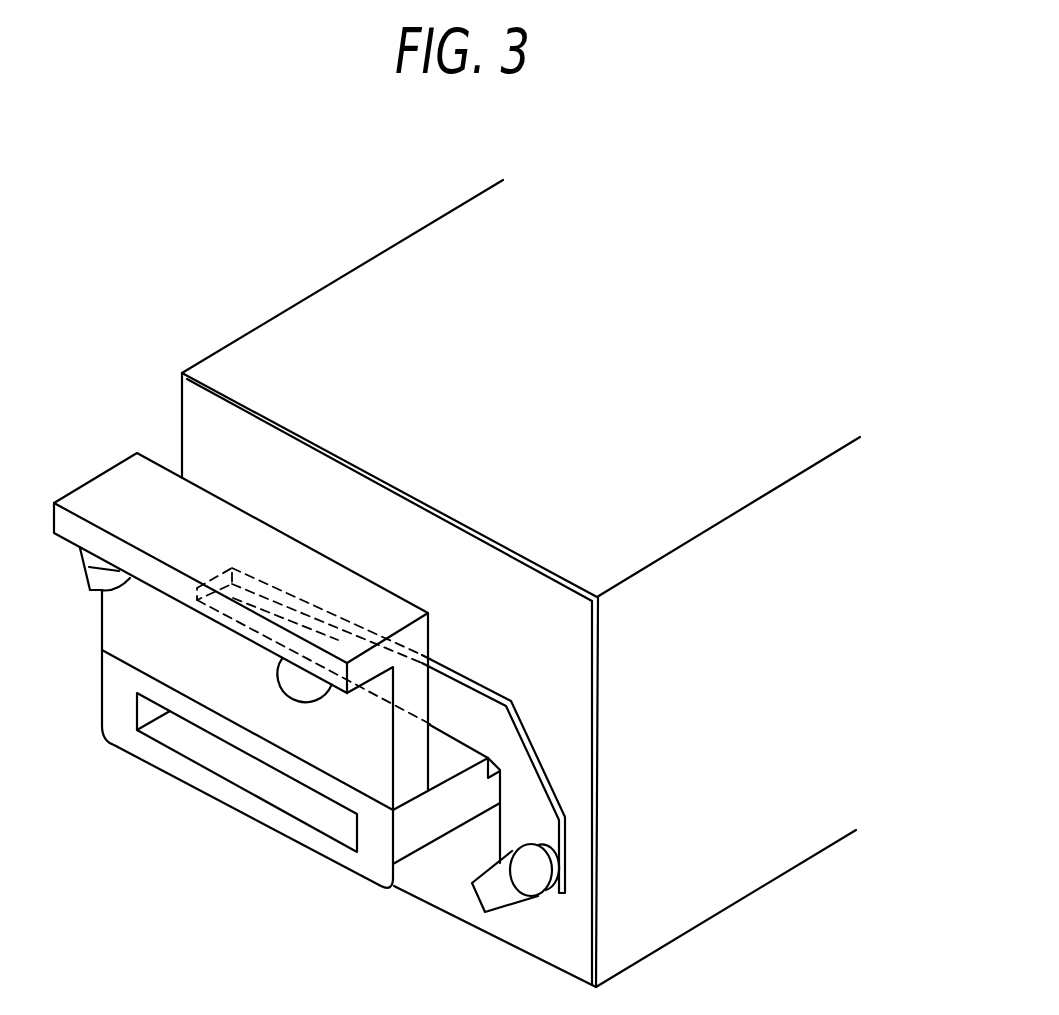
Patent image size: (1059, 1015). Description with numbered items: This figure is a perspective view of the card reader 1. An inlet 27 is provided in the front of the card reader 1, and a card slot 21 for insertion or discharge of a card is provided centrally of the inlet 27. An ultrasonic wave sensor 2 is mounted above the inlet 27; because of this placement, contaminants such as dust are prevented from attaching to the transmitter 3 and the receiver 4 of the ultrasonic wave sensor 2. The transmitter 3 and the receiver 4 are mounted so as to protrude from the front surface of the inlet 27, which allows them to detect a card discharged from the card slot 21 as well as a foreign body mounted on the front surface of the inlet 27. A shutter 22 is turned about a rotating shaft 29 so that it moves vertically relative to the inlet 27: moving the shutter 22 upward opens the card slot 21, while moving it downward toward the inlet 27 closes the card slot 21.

The card reader 1 is at (337, 260).
The ultrasonic wave sensor 2 is at (98, 495).
The transmitter 3 is at (83, 570).
The receiver 4 is at (298, 683).
The card slot 21 is at (207, 753).
The shutter 22 is at (547, 833).
The inlet 27 is at (372, 870).
The rotating shaft 29 is at (528, 882).